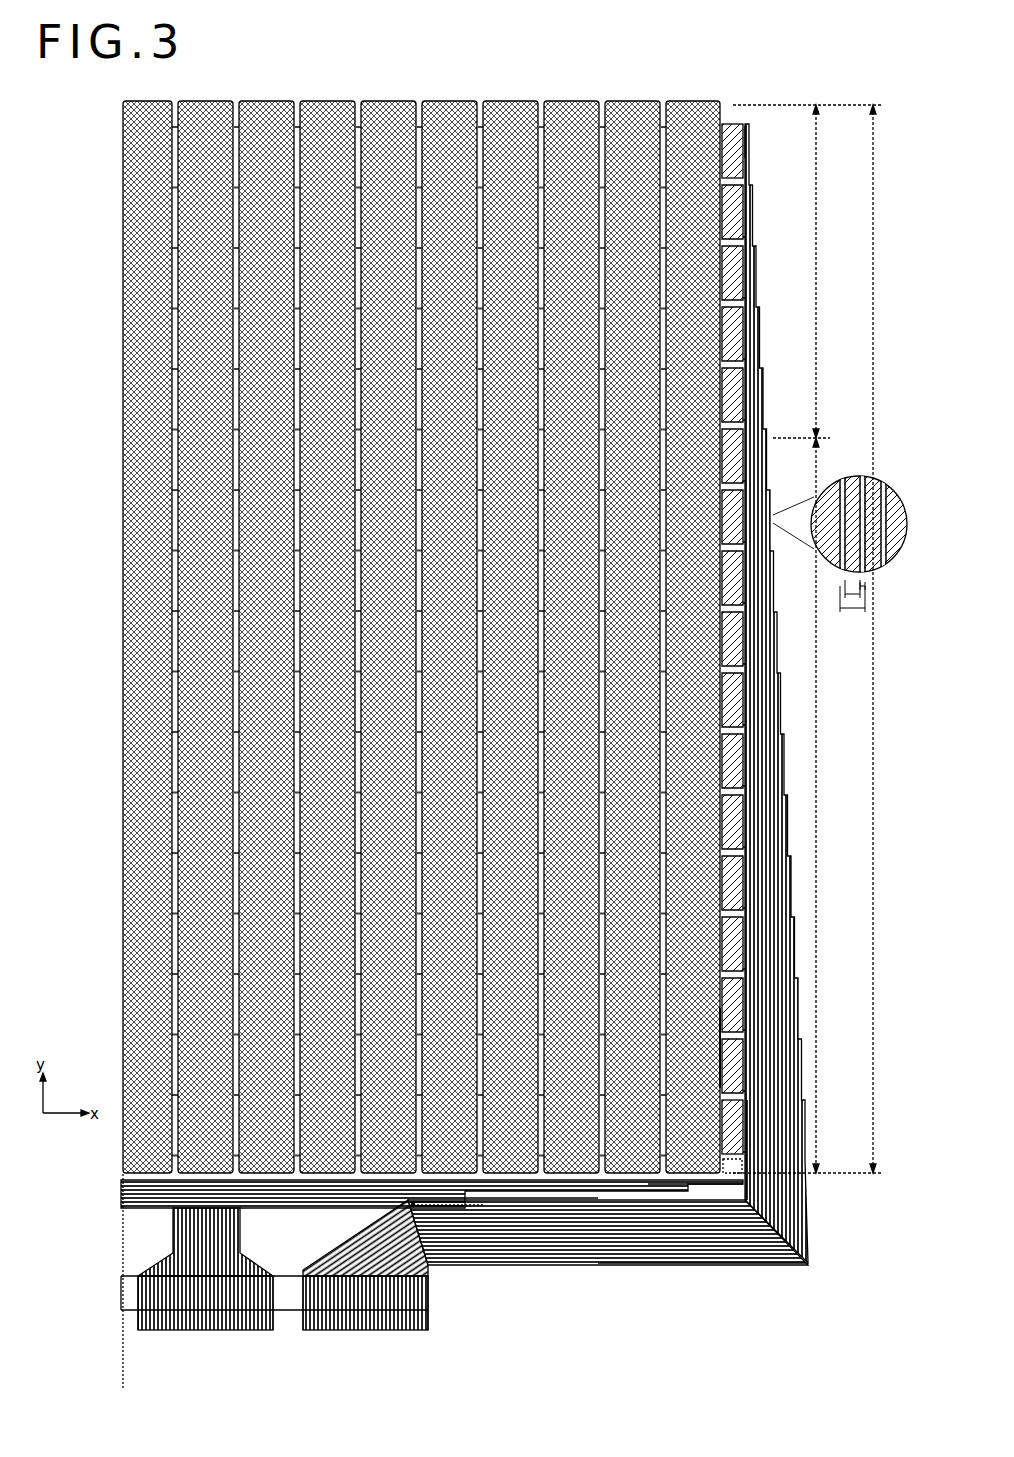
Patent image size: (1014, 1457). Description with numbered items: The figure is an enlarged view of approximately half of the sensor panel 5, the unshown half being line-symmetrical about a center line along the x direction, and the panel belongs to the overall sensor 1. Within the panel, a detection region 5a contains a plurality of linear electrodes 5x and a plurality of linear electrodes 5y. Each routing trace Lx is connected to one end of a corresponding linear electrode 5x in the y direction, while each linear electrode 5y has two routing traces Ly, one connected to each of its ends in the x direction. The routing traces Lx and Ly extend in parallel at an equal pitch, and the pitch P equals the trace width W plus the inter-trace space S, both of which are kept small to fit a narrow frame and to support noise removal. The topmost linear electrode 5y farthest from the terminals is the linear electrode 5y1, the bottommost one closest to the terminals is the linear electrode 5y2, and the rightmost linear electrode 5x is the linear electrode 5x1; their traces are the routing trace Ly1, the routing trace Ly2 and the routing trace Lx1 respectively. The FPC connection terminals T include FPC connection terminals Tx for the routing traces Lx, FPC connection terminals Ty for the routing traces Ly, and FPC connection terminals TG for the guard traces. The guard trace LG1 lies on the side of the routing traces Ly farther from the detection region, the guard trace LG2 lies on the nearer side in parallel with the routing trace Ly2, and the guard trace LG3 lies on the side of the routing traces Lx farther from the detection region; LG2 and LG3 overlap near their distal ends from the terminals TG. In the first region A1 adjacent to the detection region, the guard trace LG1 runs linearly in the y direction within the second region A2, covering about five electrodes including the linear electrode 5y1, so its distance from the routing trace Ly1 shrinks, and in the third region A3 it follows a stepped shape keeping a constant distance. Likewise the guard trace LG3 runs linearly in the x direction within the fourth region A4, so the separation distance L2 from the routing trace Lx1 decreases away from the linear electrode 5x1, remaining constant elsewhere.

The touch sensor 1 is at (744, 148).
The sensor panel 5 is at (410, 92).
The detection region 5a is at (516, 93).
The linear electrodes 5x is at (623, 93).
The linear electrode 5x1 is at (706, 1041).
The linear electrodes 5y is at (724, 116).
The linear electrode 5y1 is at (702, 95).
The linear electrode 5y2 is at (738, 1100).
The first region A1 is at (817, 639).
The second region A2 is at (810, 271).
The third region A3 is at (830, 805).
The fourth region A4 is at (447, 1215).
The trace width W is at (844, 588).
The pitch P is at (852, 609).
The inter-trace space S is at (856, 580).
The routing traces Lx is at (163, 1223).
The routing trace Lx1 is at (312, 1202).
The routing traces Ly is at (801, 1182).
The routing trace Ly1 is at (801, 1230).
The routing trace Ly2 is at (743, 1134).
The separation distance L2 is at (680, 1183).
The guard trace LG1 is at (770, 1260).
The guard trace LG2 is at (632, 1260).
The guard trace LG3 is at (498, 1196).
The FPC connection terminals T is at (128, 1304).
The FPC connection terminals TG is at (412, 1348).
The FPC connection terminals Tx is at (262, 1328).
The FPC connection terminals Ty is at (417, 1328).